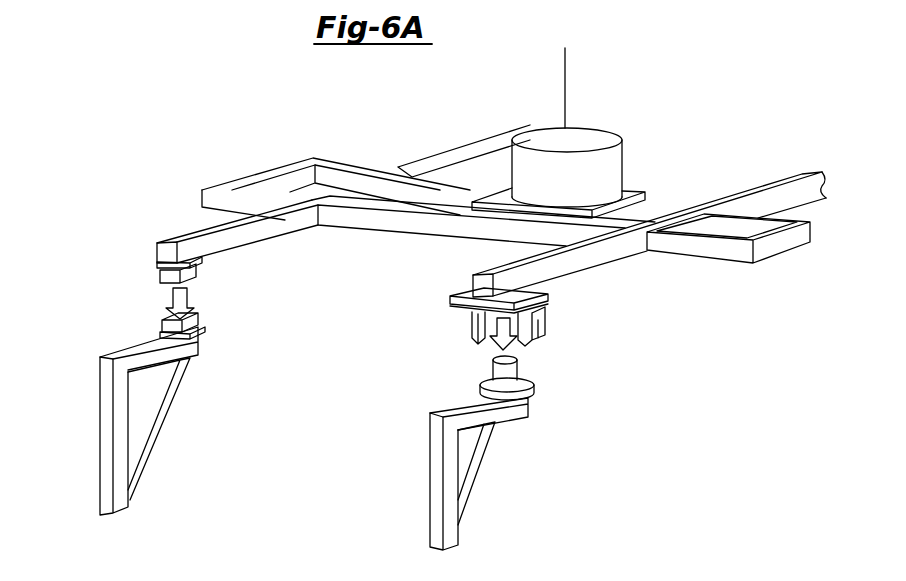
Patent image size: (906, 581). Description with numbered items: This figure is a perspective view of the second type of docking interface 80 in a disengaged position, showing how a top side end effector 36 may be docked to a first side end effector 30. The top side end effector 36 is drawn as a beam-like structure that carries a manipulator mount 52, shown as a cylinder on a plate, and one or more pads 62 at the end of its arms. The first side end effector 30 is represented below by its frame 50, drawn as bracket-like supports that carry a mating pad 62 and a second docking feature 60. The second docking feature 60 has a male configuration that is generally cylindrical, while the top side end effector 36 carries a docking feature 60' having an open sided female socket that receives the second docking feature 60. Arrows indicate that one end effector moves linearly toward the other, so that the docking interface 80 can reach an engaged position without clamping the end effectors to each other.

The top side end effector 36 is at (272, 165).
The manipulator mount 52 is at (582, 181).
The pad 62 is at (165, 322).
The second type of docking interface 80 is at (529, 318).
The docking feature 60' is at (440, 331).
The second docking feature 60 is at (536, 376).
The first side end effector 30 is at (98, 435).
The frame 50 is at (163, 417).